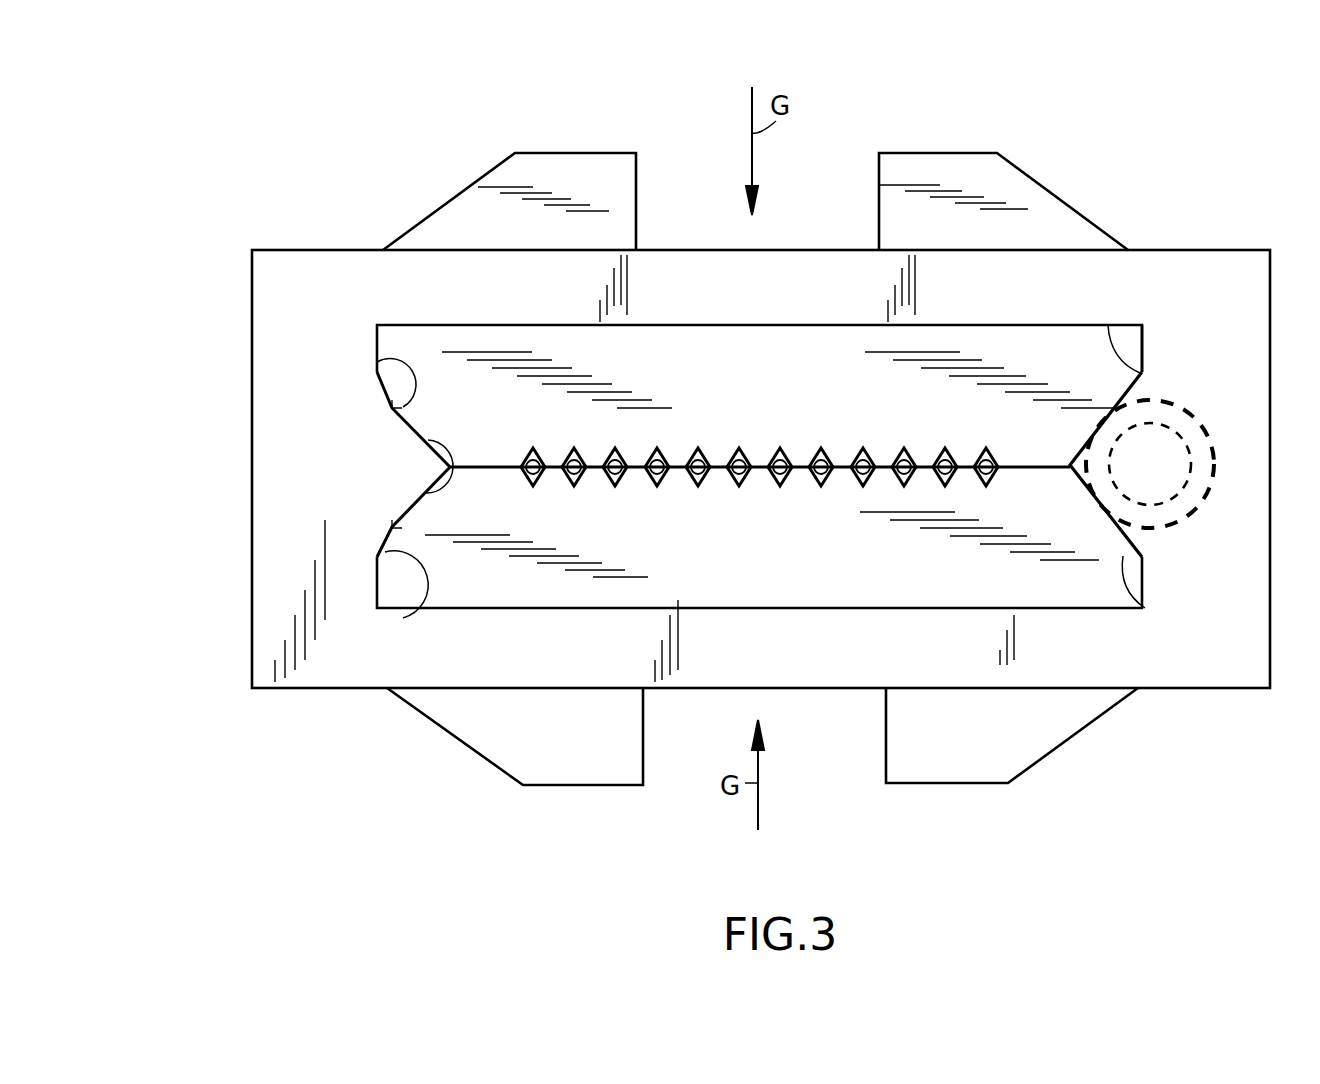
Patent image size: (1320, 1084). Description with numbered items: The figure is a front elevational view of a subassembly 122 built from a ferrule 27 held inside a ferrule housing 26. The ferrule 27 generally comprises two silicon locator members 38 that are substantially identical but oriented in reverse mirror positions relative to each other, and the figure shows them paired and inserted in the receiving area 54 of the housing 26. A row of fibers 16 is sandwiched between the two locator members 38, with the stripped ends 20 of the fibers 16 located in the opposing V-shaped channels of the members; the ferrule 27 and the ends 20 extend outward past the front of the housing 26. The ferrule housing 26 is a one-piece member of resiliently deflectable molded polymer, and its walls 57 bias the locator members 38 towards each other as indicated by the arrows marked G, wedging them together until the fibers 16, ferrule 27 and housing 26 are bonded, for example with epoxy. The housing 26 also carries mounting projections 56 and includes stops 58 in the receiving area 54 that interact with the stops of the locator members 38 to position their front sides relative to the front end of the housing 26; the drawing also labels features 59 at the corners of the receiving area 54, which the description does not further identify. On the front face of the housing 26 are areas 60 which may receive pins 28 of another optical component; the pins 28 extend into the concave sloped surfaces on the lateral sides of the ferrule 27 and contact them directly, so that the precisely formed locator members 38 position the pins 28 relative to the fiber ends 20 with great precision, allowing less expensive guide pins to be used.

The subassembly 122 is at (723, 377).
The ferrule housing 26 is at (250, 300).
The mounting projections 56 is at (562, 152).
The walls 57 is at (703, 280).
The locator member 38 is at (774, 554).
The receiving area 54 is at (1143, 348).
The stops 58 is at (1128, 395).
The rounded corners 59 is at (377, 362).
The areas 60 is at (400, 468).
The pins 28 is at (1210, 490).
The fibers 16 is at (760, 468).
The ends 20 is at (782, 484).
The ferrule 27 is at (610, 565).